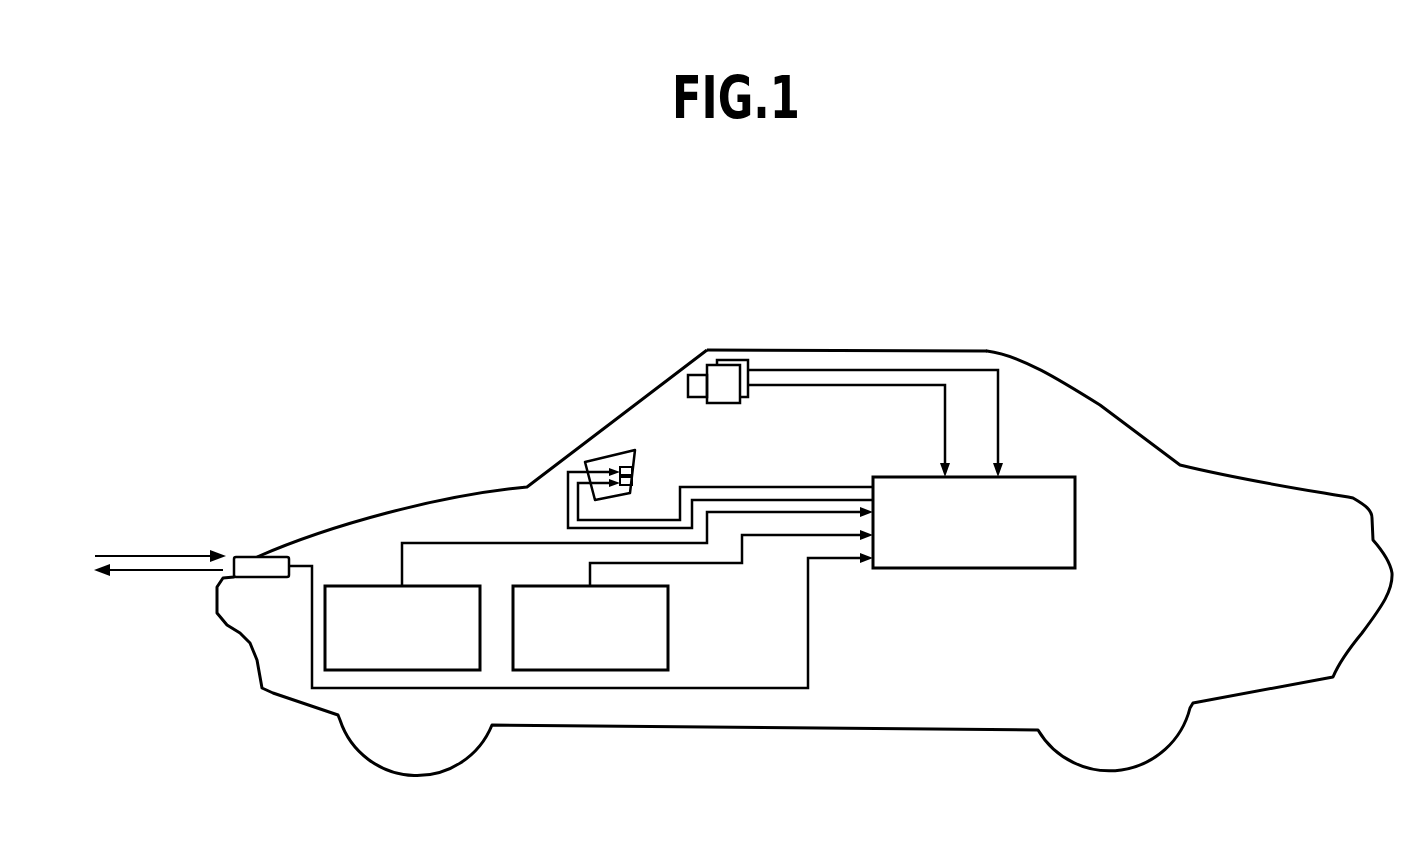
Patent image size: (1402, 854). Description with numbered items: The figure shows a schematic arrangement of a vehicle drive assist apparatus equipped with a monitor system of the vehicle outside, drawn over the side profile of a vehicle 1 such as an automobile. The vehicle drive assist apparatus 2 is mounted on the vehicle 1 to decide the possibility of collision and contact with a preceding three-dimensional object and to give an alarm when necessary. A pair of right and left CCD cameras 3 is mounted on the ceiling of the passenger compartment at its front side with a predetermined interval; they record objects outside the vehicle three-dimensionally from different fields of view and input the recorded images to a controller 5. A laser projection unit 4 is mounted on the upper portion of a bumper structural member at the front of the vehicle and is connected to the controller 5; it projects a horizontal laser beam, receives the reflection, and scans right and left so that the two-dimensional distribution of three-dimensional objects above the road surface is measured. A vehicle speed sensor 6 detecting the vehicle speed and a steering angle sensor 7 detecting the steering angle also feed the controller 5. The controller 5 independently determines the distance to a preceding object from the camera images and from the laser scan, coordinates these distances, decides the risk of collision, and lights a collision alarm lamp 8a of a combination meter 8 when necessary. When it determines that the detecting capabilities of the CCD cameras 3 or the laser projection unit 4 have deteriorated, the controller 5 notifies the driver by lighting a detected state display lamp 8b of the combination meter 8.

The vehicle 1 is at (1100, 405).
The vehicle drive assist apparatus 2 is at (836, 343).
The CCD camera 3 is at (732, 360).
The laser projection unit 4 is at (243, 557).
The controller 5 is at (975, 568).
The vehicle speed sensor 6 is at (378, 586).
The steering angle sensor 7 is at (668, 610).
The combination meter 8 is at (716, 453).
The collision alarm lamp 8a is at (632, 470).
The detected state display lamp 8b is at (632, 484).